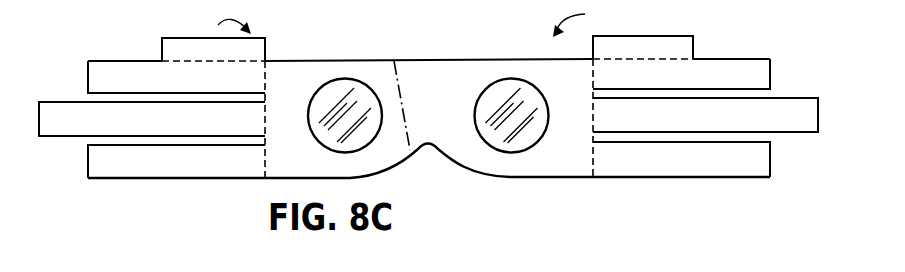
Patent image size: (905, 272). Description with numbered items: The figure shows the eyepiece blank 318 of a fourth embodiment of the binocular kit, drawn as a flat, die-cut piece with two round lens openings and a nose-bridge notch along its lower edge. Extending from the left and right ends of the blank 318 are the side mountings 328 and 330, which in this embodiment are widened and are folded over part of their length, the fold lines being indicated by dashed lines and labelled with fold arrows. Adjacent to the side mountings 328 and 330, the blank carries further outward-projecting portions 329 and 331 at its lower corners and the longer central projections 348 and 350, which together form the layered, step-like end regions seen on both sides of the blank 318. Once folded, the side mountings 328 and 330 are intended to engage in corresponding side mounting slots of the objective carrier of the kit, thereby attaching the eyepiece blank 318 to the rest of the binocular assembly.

The stereoscopic viewer blank 318 is at (423, 49).
The side mounting 328 is at (128, 60).
The left lower strip 329 is at (203, 180).
The side mounting 330 is at (740, 58).
The right lower strip 331 is at (607, 180).
The left middle strip 348 is at (70, 137).
The right middle strip 350 is at (808, 133).